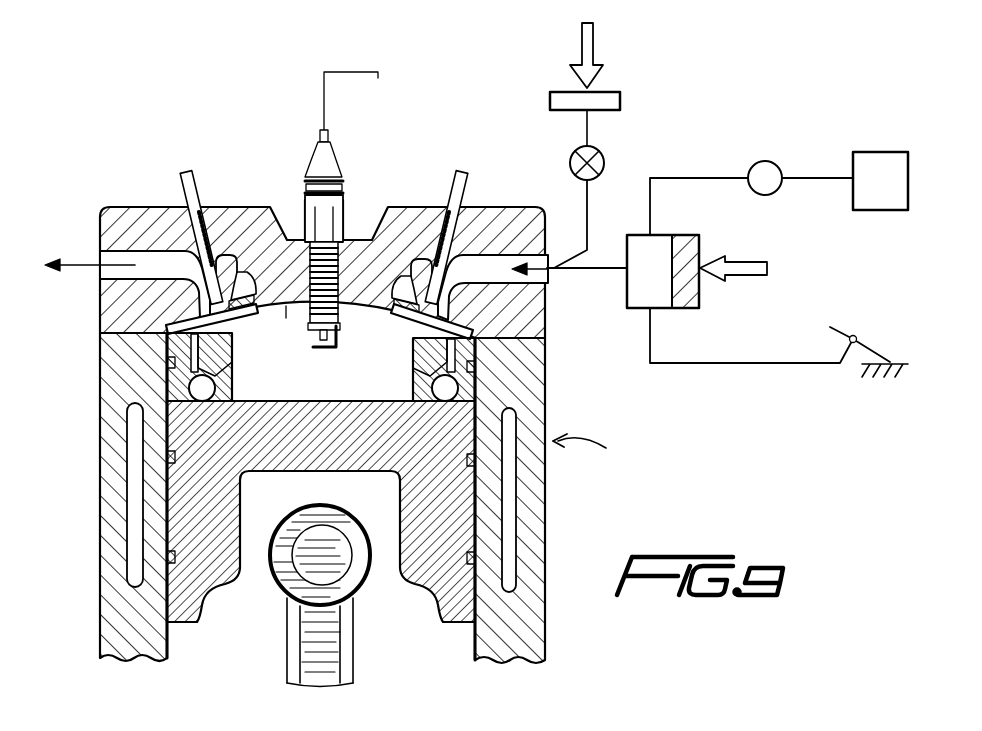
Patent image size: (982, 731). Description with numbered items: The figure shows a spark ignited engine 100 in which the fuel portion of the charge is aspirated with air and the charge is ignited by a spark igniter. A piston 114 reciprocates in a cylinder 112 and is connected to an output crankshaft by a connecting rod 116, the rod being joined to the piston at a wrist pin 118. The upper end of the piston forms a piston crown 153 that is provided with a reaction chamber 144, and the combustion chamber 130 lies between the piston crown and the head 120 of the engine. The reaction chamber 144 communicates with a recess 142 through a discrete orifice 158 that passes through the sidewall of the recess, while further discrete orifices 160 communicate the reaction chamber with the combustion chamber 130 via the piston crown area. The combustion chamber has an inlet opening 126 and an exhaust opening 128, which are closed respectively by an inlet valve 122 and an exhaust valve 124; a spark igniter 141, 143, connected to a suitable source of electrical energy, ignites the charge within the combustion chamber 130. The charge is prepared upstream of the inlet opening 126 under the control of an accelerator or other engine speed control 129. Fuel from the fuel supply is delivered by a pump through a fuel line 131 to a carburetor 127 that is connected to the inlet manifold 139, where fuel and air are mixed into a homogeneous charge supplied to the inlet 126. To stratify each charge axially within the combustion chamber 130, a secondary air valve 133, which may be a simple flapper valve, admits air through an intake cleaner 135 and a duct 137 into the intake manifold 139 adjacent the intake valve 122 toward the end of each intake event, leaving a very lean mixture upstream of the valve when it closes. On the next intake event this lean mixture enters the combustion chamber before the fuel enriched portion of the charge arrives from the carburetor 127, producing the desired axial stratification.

The engine 100 is at (598, 442).
The cylinder 112 is at (168, 645).
The piston 114 is at (390, 485).
The connecting rod 116 is at (355, 648).
The wrist pin 118 is at (310, 542).
The head 120 is at (150, 207).
The inlet valve 122 is at (409, 266).
The exhaust valve 124 is at (228, 317).
The inlet opening 126 is at (553, 274).
The carburetor 127 is at (640, 235).
The exhaust opening 128 is at (100, 258).
The engine speed control 129 is at (848, 328).
The combustion chamber 130 is at (287, 318).
The fuel line 131 is at (653, 202).
The secondary air valve 133 is at (570, 160).
The intake cleaner 135 is at (550, 100).
The duct 137 is at (583, 203).
The inlet manifold 139 is at (596, 268).
The spark igniter 141 is at (313, 347).
The recess 142 is at (338, 386).
The spark igniter 143 is at (317, 221).
The reaction chamber 144 is at (452, 400).
The piston crown 153 is at (150, 322).
The discrete orifice 158 is at (230, 370).
The discrete orifices 160 is at (445, 332).